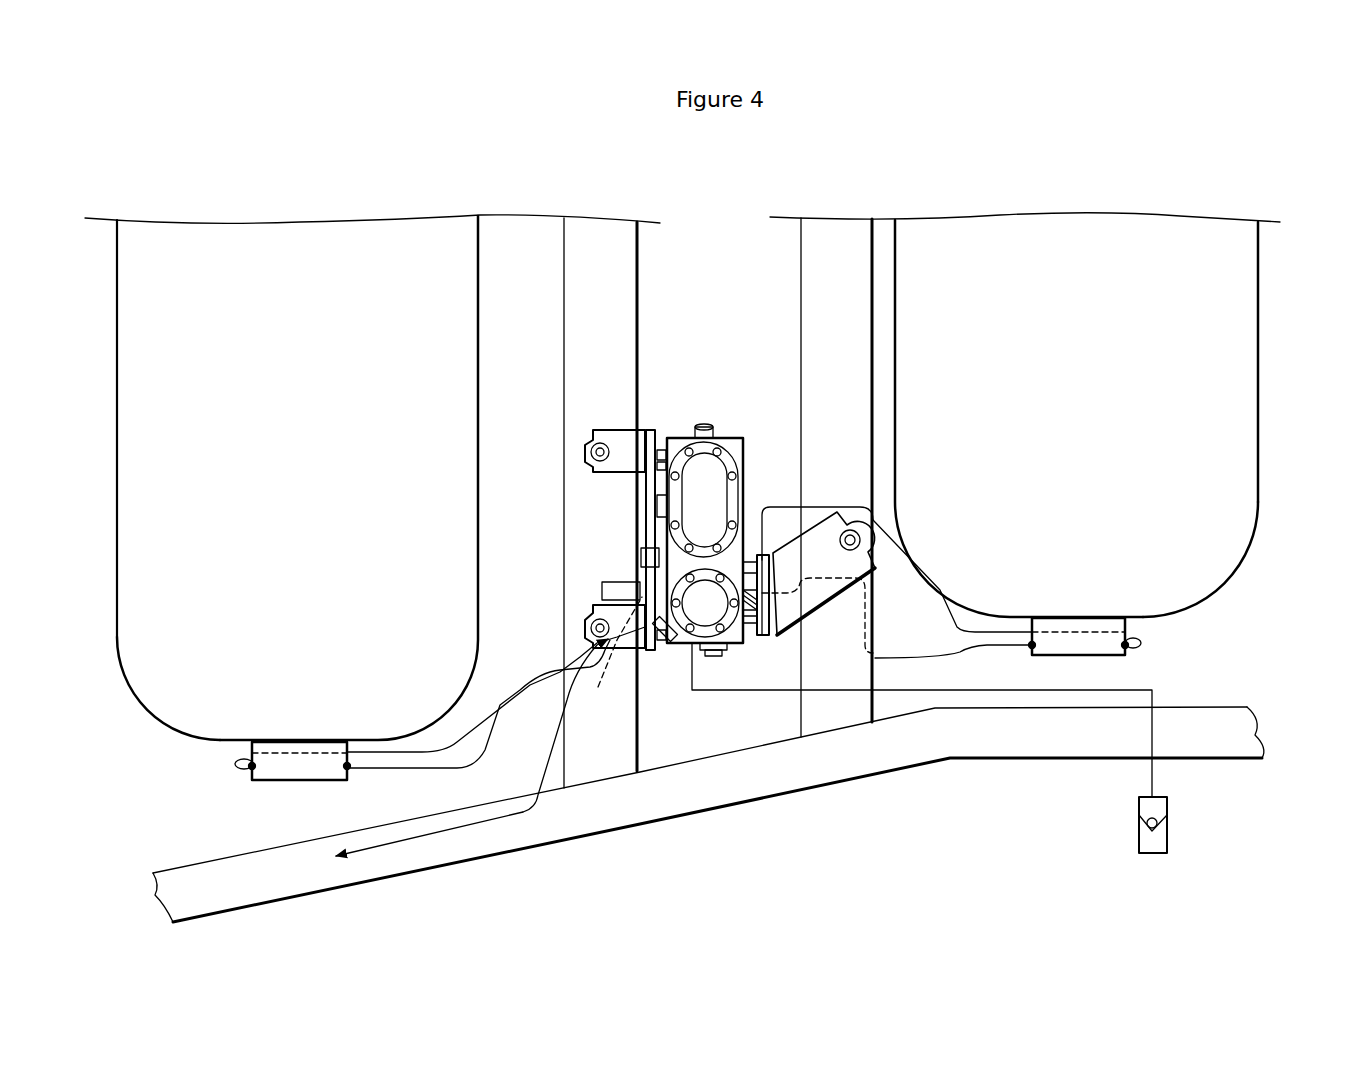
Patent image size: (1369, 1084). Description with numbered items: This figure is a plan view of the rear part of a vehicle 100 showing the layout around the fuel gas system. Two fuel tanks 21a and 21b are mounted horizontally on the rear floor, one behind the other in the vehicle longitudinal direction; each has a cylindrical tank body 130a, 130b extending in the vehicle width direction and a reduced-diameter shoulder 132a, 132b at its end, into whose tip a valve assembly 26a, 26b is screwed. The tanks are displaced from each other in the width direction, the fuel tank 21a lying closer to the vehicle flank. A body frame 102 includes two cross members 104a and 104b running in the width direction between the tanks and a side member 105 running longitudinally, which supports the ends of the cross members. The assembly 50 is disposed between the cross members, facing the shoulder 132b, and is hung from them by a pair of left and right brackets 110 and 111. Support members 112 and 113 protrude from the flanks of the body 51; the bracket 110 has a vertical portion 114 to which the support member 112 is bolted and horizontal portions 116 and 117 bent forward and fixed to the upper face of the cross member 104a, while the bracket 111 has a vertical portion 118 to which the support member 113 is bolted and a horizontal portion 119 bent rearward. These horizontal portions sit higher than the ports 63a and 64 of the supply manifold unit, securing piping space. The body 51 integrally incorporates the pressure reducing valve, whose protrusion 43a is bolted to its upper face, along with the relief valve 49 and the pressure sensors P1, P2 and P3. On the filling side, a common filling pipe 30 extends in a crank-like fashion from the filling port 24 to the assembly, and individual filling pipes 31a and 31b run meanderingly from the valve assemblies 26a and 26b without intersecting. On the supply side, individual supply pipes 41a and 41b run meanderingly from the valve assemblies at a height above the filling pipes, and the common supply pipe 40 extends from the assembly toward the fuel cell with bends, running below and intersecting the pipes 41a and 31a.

The vehicle 100 is at (772, 177).
The body frame 102 is at (642, 286).
The cross member 104a is at (595, 247).
The cross member 104b is at (842, 243).
The fuel tank 21a is at (266, 458).
The fuel tank 21b is at (1116, 400).
The tank body 130a is at (117, 478).
The tank body 130b is at (1258, 390).
The shoulder 132a is at (148, 707).
The shoulder 132b is at (1228, 583).
The valve assembly 26a is at (301, 741).
The valve assembly 26b is at (1075, 618).
The individual supply pipe 41a is at (243, 768).
The individual supply pipe 41b is at (975, 652).
The individual filling pipe 31a is at (478, 762).
The individual filling pipe 31b is at (912, 580).
The common filling pipe 30 is at (1130, 690).
The filling port 24 is at (1167, 823).
The side member 105 is at (748, 782).
The common supply pipe 40 is at (538, 802).
The assembly 50 is at (730, 501).
The body 51 is at (740, 448).
The relief valve 49 is at (704, 425).
The port 64 is at (717, 699).
The protrusion 43a is at (717, 658).
The bracket 110 is at (622, 480).
The horizontal portion 117 is at (618, 433).
The horizontal portion 116 is at (593, 625).
The vertical portion 114 is at (652, 437).
The support member 112 is at (663, 437).
The pressure sensor P3 is at (657, 507).
The pressure sensor P2 is at (641, 556).
The pressure sensor P1 is at (602, 590).
The support member 113 is at (750, 562).
The port 63a is at (660, 640).
The vertical portion 118 is at (766, 636).
The bracket 111 is at (815, 620).
The horizontal portion 119 is at (814, 614).